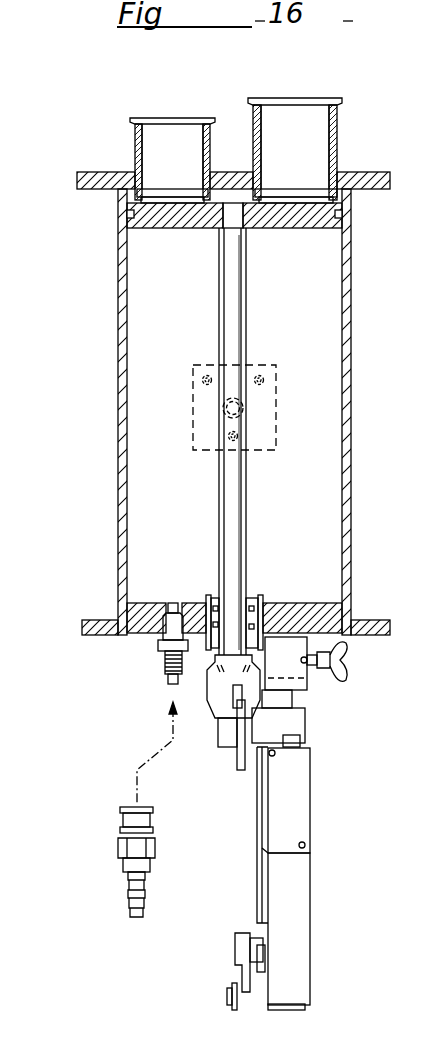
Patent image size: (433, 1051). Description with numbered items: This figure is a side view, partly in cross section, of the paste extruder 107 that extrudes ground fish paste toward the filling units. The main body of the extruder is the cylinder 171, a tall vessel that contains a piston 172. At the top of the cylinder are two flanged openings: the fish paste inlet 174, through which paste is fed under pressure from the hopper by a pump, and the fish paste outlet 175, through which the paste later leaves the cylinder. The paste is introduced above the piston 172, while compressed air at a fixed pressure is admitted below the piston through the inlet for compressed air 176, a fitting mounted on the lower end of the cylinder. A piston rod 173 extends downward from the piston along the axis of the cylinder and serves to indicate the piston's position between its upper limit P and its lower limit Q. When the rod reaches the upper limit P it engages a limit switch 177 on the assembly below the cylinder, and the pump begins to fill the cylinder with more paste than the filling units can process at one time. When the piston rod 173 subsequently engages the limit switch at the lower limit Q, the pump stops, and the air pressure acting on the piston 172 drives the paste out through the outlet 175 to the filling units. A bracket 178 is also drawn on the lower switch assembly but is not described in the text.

The paste extruder 107 is at (102, 355).
The cylinder 171 is at (351, 273).
The piston 172 is at (174, 229).
The piston rod 173 is at (243, 530).
The fish paste inlet 174 is at (157, 126).
The fish paste outlet 175 is at (293, 104).
The inlet for compressed air 176 is at (166, 660).
The limit switch 177 is at (261, 742).
The bracket 178 is at (263, 950).
The upper limit P is at (243, 697).
The lower limit Q is at (255, 997).